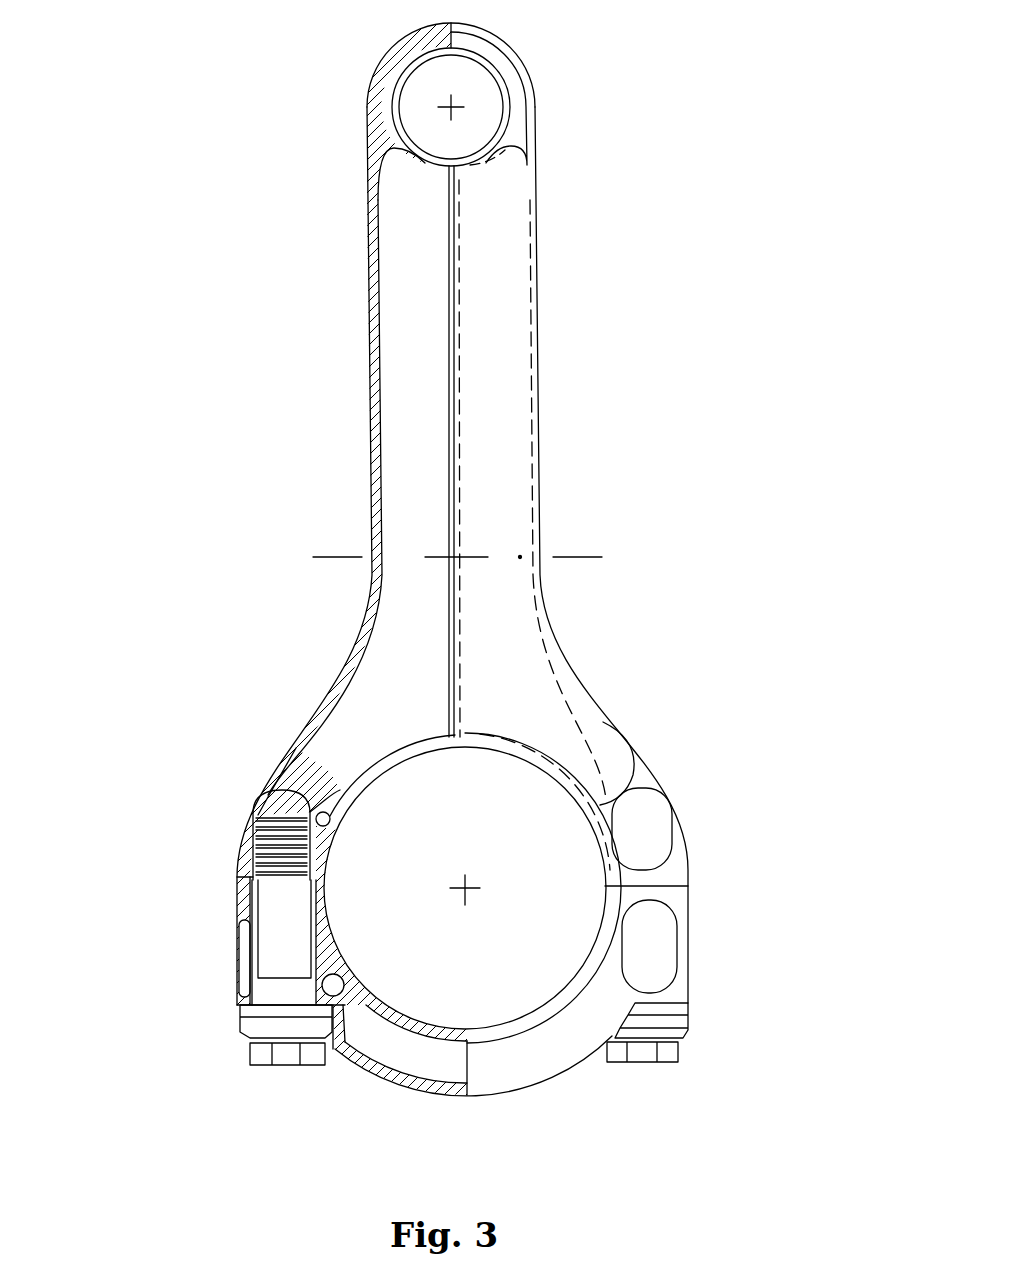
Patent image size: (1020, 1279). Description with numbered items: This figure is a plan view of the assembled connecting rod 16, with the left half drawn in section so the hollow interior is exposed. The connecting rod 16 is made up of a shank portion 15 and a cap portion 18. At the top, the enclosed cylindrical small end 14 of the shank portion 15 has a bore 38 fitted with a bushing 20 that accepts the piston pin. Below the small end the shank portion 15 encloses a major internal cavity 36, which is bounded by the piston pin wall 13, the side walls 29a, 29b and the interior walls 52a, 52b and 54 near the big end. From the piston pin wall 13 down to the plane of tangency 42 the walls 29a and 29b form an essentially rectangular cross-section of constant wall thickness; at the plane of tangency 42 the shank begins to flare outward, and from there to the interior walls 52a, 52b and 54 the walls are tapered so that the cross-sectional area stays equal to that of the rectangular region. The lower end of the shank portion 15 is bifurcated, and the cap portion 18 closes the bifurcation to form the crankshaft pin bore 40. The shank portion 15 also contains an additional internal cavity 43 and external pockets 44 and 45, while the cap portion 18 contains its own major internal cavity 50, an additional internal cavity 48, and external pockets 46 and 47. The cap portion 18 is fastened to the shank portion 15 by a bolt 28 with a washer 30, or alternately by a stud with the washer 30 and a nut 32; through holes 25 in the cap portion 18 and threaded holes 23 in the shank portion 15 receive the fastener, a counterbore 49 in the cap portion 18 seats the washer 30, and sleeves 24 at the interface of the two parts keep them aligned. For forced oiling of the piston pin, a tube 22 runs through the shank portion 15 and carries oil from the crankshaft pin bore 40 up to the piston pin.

The small end 14 is at (527, 78).
The bushing 20 is at (405, 122).
The bore 38 is at (458, 110).
The piston pin wall 13 is at (420, 170).
The major internal cavity 36 is at (415, 355).
The wall 29a is at (368, 445).
The wall 29b is at (535, 358).
The tube 22 is at (455, 495).
The plane of tangency 42 is at (347, 558).
The shank portion 15 is at (790, 477).
The connecting rod 16 is at (150, 560).
The cap portion 18 is at (820, 950).
The crankshaft pin bore 40 is at (470, 893).
The interior wall 54 is at (430, 740).
The interior wall 52a is at (308, 800).
The interior wall 52b is at (598, 803).
The threaded hole 23 is at (280, 800).
The additional internal cavity 43 is at (330, 820).
The sleeve 24 is at (320, 893).
The bolt 28 is at (285, 935).
The external pocket 44 is at (243, 862).
The external pocket 47 is at (243, 945).
The through hole 25 is at (256, 950).
The additional internal cavity 48 is at (345, 985).
The external pocket 45 is at (648, 838).
The external pocket 46 is at (655, 940).
The washer 30 is at (690, 1010).
The nut 32 is at (665, 1050).
The major internal cavity 50 is at (473, 1050).
The counterbore 49 is at (335, 1050).